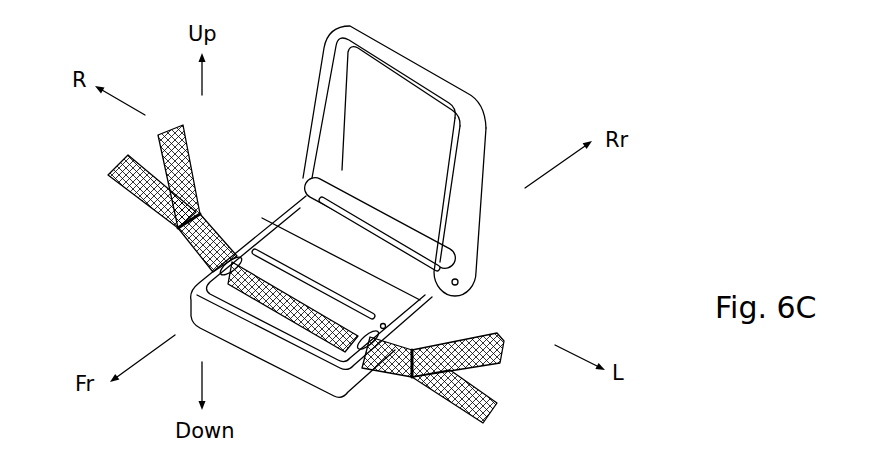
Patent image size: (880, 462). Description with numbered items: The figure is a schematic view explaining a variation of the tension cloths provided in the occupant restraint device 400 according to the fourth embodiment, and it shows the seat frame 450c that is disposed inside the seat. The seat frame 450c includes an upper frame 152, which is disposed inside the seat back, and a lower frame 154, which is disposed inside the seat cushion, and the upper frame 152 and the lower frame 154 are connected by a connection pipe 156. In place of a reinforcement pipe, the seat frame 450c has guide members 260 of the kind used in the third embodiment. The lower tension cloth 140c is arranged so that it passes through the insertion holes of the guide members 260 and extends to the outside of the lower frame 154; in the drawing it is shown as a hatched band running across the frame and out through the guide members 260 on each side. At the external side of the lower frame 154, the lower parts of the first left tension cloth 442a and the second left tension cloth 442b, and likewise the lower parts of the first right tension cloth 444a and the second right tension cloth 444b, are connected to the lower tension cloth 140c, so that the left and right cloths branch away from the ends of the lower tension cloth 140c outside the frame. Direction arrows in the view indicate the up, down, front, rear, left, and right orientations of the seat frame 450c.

The occupant restraint device 400 is at (278, 78).
The upper frame 152 is at (425, 68).
The lower frame 154 is at (266, 362).
The connection pipe 156 is at (385, 231).
The lower tension cloth 140c is at (290, 290).
The seat frame 450c is at (500, 132).
The guide members 260 is at (222, 277).
The first left tension cloth 442a is at (490, 383).
The second left tension cloth 442b is at (505, 338).
The first right tension cloth 444a is at (130, 200).
The second right tension cloth 444b is at (196, 162).